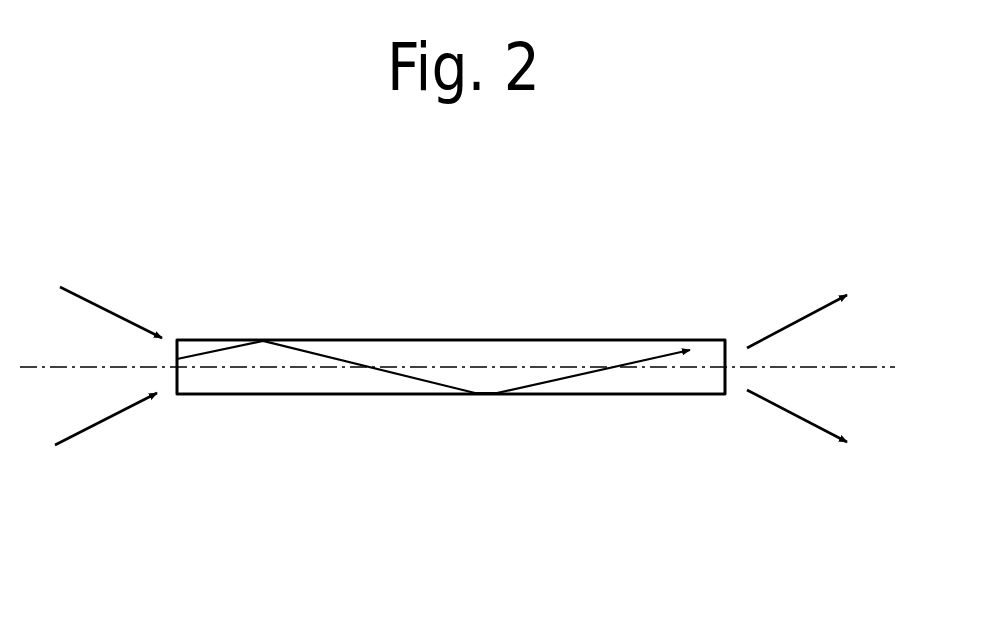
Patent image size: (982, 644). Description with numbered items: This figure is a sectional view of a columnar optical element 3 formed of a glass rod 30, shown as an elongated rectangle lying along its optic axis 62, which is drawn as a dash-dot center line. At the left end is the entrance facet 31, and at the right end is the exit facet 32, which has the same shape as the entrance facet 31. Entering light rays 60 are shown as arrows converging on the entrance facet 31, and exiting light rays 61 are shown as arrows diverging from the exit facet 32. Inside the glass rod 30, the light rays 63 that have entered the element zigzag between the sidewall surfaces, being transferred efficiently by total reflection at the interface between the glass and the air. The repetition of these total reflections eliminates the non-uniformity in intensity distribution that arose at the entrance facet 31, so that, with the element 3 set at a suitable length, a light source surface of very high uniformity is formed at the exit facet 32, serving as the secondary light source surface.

The columnar optical element 3 is at (563, 338).
The glass rod 30 is at (370, 390).
The entrance facet 31 is at (174, 385).
The exit facet 32 is at (727, 353).
The entering light rays 60 is at (95, 422).
The exiting light rays 61 is at (788, 328).
The optic axis 62 is at (470, 365).
The light rays having entered the columnar optical element 63 is at (563, 377).